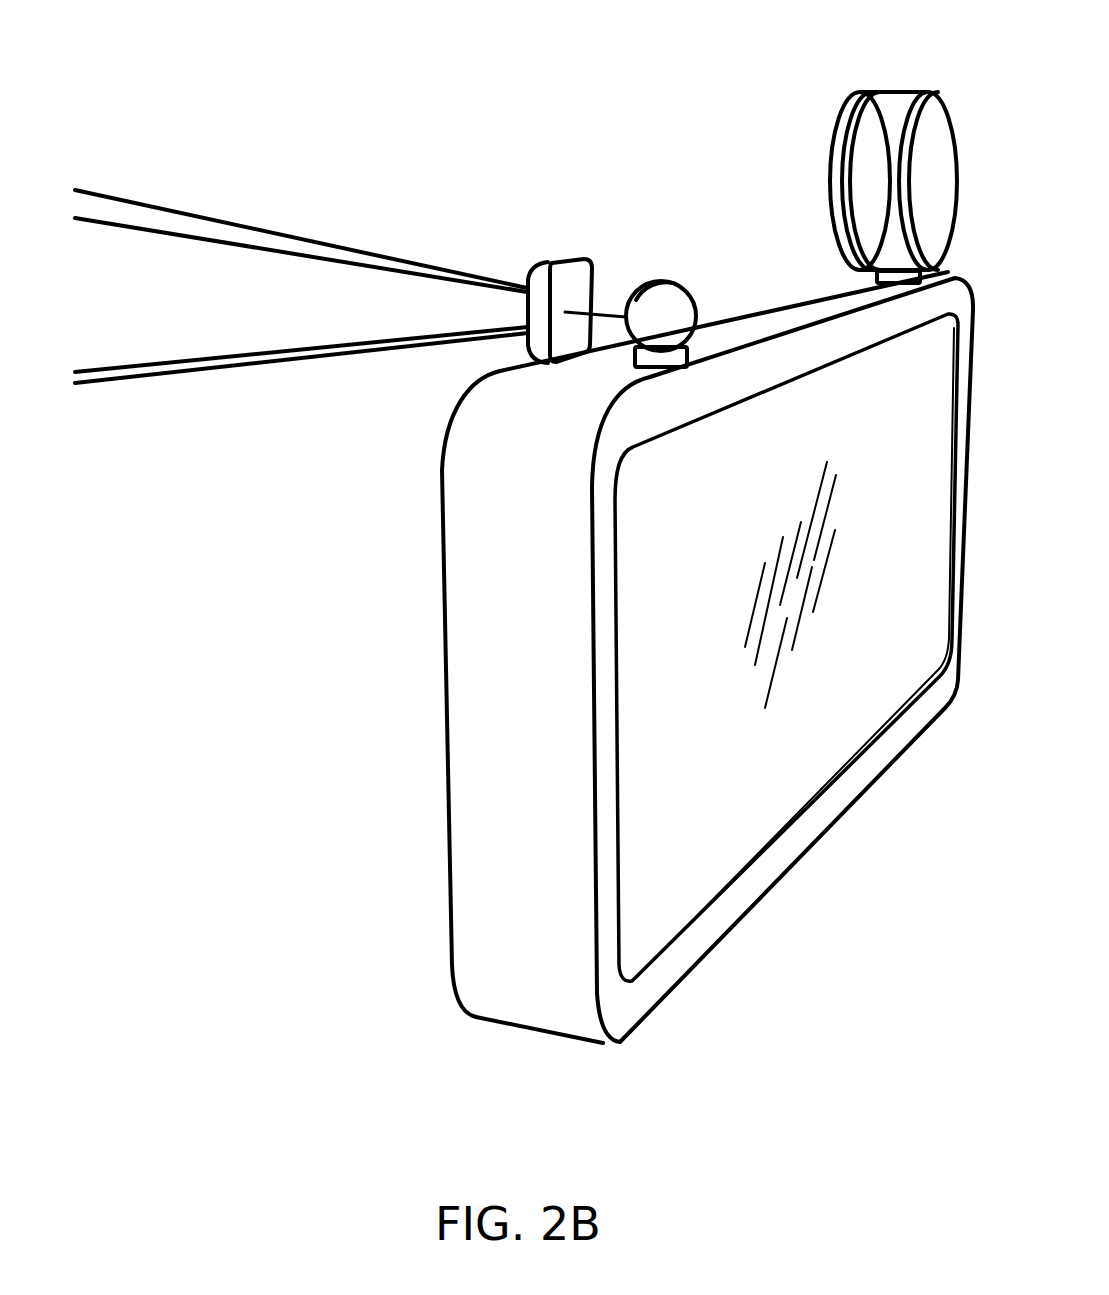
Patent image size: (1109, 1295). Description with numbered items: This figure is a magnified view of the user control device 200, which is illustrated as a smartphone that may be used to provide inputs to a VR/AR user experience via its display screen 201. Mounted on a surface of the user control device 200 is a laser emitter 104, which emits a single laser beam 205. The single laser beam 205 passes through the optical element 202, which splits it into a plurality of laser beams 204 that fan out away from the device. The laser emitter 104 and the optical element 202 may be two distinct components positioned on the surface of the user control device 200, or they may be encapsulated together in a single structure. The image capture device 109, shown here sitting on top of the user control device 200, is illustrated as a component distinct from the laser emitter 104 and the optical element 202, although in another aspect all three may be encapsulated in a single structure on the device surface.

The user control device 200 is at (492, 1043).
The display screen 201 is at (858, 707).
The optical element 202 is at (545, 262).
The plurality of laser beams 204 is at (250, 243).
The single laser beam 205 is at (605, 310).
The laser emitter 104 is at (663, 298).
The image capture device 109 is at (836, 118).